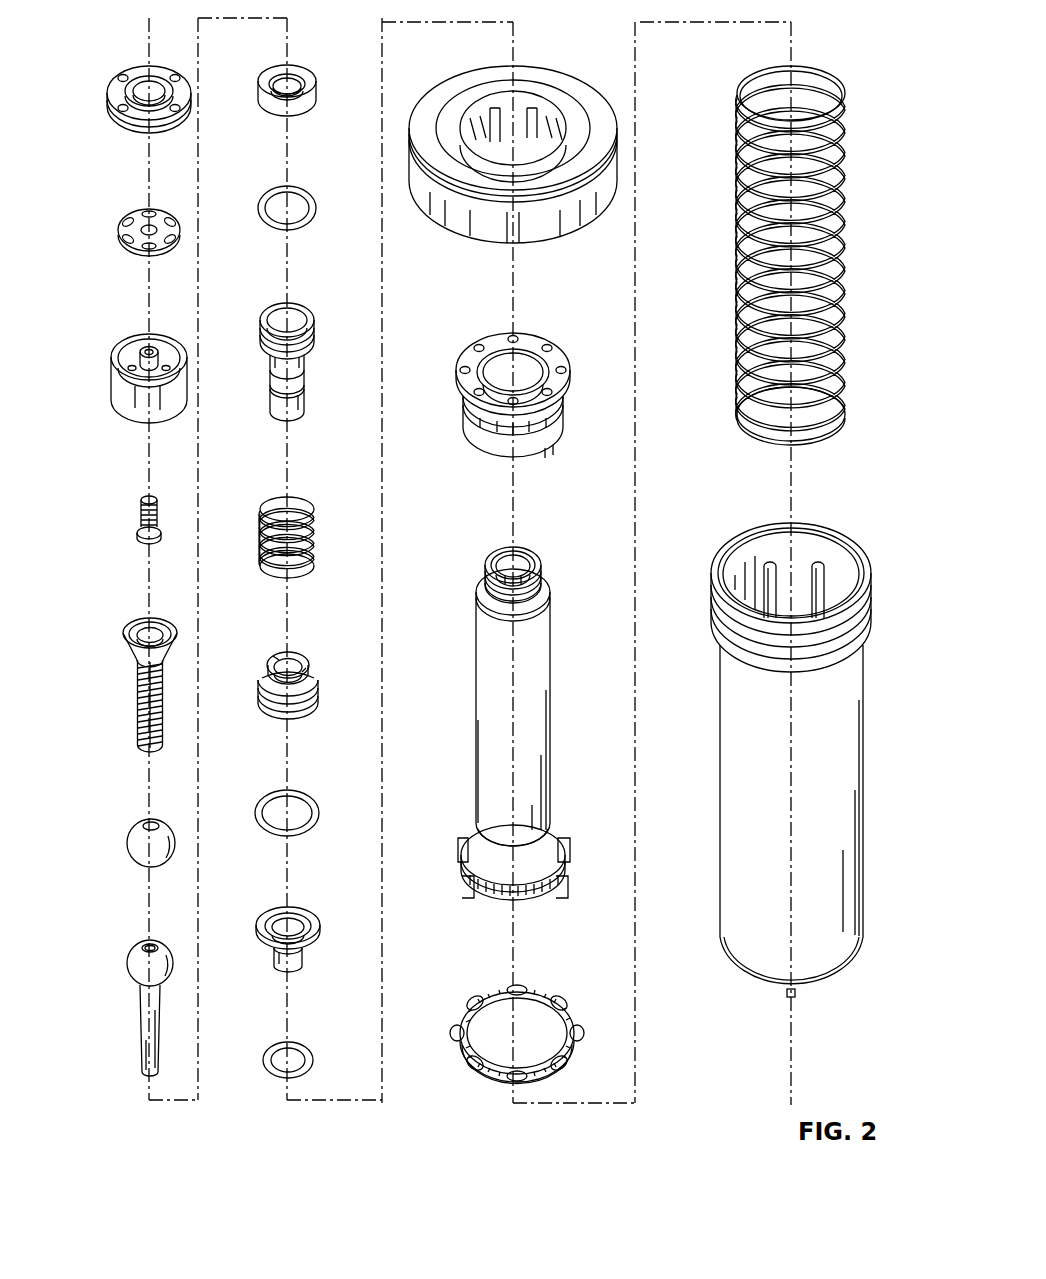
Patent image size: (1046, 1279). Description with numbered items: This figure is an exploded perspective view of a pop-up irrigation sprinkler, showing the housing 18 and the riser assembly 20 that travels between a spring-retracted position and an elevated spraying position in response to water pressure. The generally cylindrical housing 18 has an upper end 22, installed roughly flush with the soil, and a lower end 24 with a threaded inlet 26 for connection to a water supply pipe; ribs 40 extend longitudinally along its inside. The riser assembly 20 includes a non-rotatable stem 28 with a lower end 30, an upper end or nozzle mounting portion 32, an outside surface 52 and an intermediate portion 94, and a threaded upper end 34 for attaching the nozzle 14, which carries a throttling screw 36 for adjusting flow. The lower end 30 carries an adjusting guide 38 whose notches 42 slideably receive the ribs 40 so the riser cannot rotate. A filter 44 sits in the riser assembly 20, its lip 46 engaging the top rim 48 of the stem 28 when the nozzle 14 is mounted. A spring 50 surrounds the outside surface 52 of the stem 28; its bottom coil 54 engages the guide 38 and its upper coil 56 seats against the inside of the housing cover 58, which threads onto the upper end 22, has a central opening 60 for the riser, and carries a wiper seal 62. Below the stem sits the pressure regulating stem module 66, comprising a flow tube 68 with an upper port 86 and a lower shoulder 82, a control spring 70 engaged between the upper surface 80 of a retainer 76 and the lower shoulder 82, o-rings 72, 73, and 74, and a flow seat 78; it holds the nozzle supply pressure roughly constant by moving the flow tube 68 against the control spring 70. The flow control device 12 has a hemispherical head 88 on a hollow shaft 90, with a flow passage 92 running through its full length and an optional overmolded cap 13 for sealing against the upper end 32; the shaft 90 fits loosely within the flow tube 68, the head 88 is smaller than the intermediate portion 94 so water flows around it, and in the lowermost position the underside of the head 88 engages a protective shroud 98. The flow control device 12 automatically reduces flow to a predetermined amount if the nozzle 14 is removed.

The flow control device 12 is at (130, 1020).
The overmolded cap 13 is at (138, 822).
The nozzle 14 is at (78, 63).
The housing 18 is at (718, 762).
The riser assembly 20 is at (474, 745).
The upper end 22 is at (748, 645).
The lower end 24 is at (750, 968).
The inlet 26 is at (778, 992).
The stem 28 is at (480, 676).
The lower end 30 is at (470, 870).
The upper end 32 is at (490, 582).
The threaded upper end 34 is at (546, 580).
The throttling screw 36 is at (133, 512).
The adjusting guide 38 is at (462, 995).
The ribs 40 is at (826, 575).
The notches 42 is at (465, 1045).
The filter 44 is at (124, 702).
The lip 46 is at (134, 628).
The top rim 48 is at (520, 548).
The spring 50 is at (727, 230).
The outside surface 52 is at (478, 770).
The bottom coil 54 is at (772, 442).
The upper coil 56 is at (746, 76).
The housing cover 58 is at (432, 120).
The central opening 60 is at (527, 150).
The seal 62 is at (460, 398).
The pressure regulating stem module 66 is at (252, 186).
The flow tube 68 is at (300, 292).
The control spring 70 is at (300, 484).
The o-ring 72 is at (300, 176).
The o-ring 73 is at (300, 779).
The o-ring 74 is at (300, 1036).
The retainer 76 is at (300, 638).
The flow seat 78 is at (300, 901).
The upper surface 80 is at (304, 672).
The lower shoulder 82 is at (312, 340).
The upper port 86 is at (280, 318).
The head 88 is at (133, 975).
The shaft 90 is at (143, 1057).
The flow passage 92 is at (148, 947).
The intermediate portion 94 is at (545, 683).
The protective shroud 98 is at (300, 50).